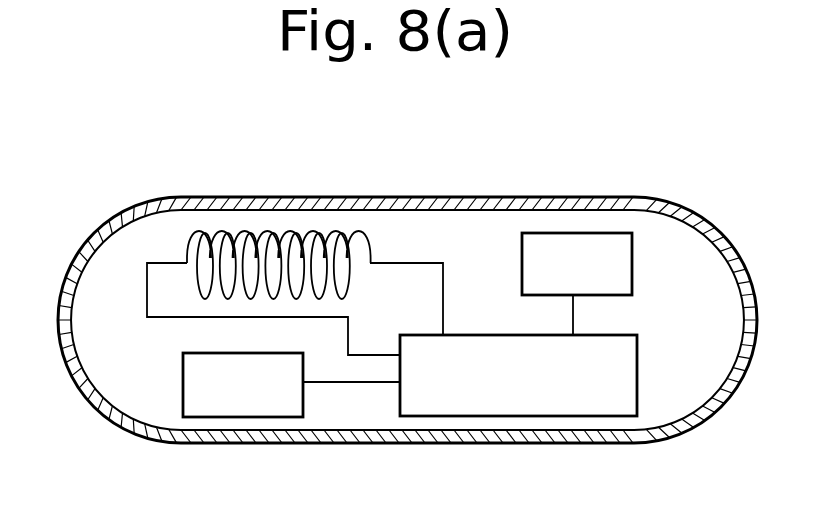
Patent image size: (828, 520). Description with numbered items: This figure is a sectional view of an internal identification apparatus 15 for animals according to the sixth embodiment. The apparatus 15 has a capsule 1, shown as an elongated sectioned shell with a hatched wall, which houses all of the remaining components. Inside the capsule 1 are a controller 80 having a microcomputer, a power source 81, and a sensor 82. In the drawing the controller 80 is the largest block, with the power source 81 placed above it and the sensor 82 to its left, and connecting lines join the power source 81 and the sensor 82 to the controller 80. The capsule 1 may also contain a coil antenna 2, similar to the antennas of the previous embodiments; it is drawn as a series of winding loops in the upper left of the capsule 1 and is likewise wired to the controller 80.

The capsule 1 is at (548, 197).
The coil antenna 2 is at (243, 229).
The internal identification apparatus 15 is at (640, 170).
The controller 80 is at (637, 355).
The power source 81 is at (632, 265).
The sensor 82 is at (183, 405).